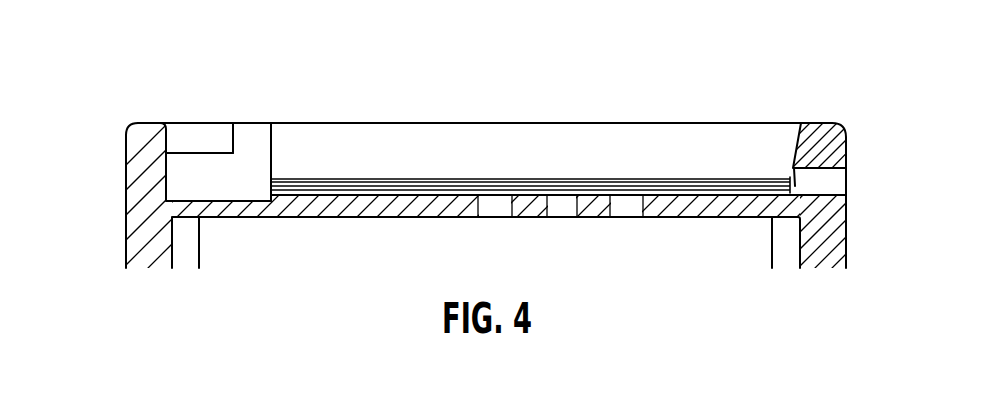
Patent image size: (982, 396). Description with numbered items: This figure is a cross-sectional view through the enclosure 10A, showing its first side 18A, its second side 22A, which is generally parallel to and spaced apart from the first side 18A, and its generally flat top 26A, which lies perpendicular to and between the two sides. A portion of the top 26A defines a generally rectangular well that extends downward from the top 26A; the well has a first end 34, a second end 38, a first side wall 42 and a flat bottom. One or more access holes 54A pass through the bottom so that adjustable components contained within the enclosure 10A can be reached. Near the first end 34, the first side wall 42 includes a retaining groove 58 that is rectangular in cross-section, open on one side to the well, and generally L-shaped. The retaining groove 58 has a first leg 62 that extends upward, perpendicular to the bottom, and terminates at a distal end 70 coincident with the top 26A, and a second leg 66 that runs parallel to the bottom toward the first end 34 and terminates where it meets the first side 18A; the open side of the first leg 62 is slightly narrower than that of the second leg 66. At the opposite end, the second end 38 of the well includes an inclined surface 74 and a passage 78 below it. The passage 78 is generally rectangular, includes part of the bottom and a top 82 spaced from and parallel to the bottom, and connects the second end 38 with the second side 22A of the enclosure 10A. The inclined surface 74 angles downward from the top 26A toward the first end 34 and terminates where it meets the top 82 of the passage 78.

The enclosure 10A is at (122, 156).
The first side 18A is at (126, 203).
The second side 22A is at (846, 241).
The top 26A is at (445, 122).
The first end 34 is at (175, 122).
The second end 38 is at (800, 123).
The first side wall 42 is at (557, 145).
The access holes 54A is at (488, 217).
The retaining groove 58 is at (227, 145).
The first leg 62 is at (272, 126).
The second leg 66 is at (210, 177).
The distal end 70 is at (258, 135).
The inclined surface 74 is at (794, 148).
The passage 78 is at (828, 185).
The top of the passage 82 is at (777, 218).